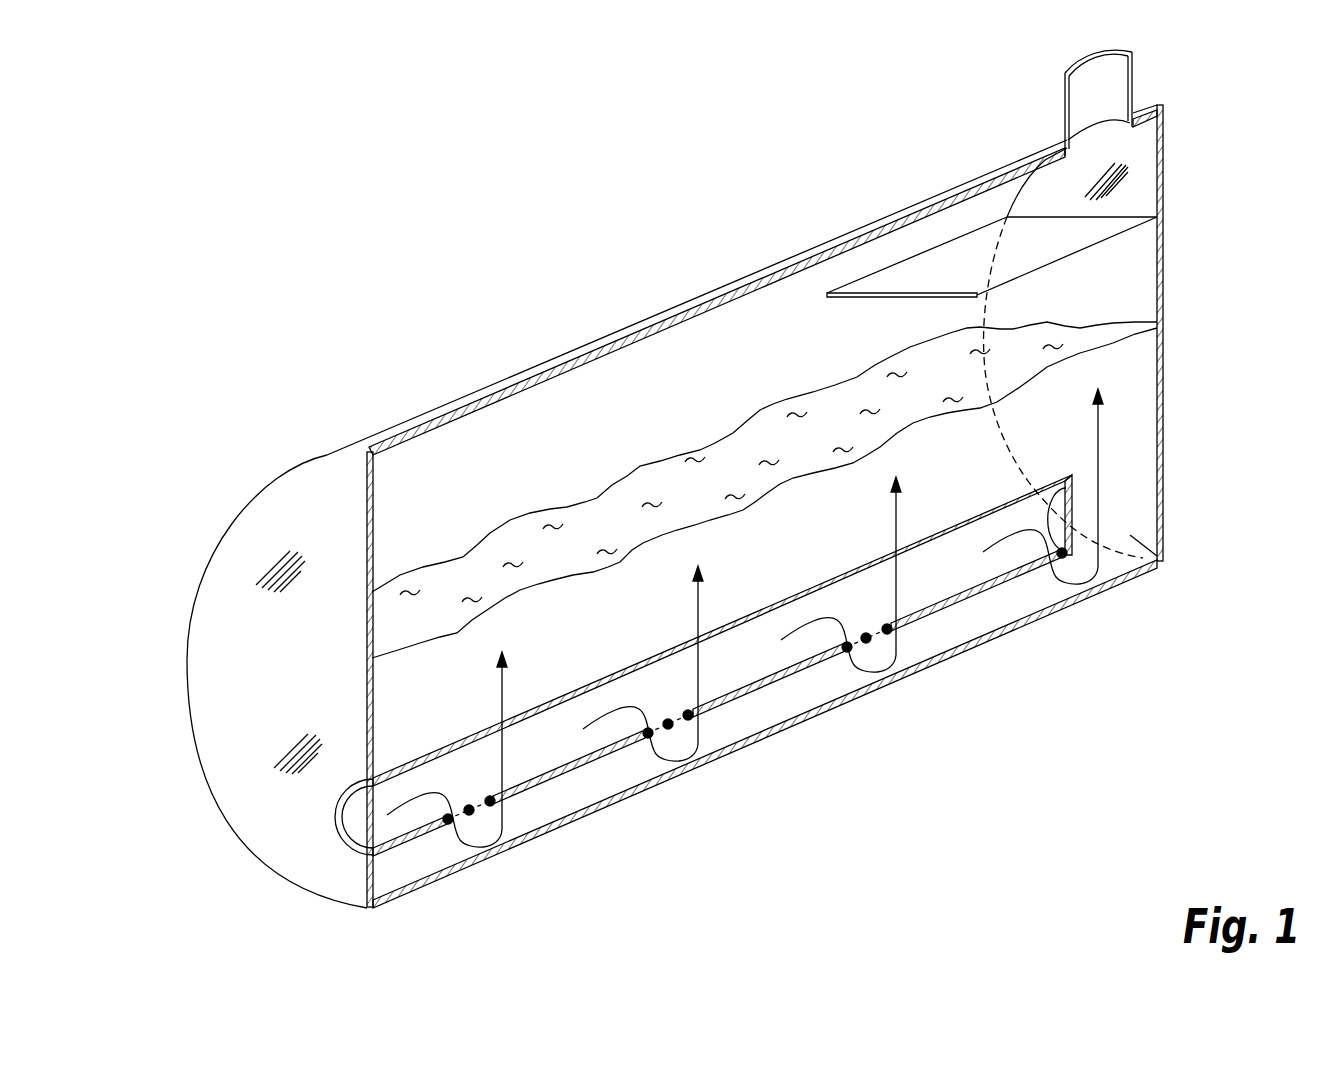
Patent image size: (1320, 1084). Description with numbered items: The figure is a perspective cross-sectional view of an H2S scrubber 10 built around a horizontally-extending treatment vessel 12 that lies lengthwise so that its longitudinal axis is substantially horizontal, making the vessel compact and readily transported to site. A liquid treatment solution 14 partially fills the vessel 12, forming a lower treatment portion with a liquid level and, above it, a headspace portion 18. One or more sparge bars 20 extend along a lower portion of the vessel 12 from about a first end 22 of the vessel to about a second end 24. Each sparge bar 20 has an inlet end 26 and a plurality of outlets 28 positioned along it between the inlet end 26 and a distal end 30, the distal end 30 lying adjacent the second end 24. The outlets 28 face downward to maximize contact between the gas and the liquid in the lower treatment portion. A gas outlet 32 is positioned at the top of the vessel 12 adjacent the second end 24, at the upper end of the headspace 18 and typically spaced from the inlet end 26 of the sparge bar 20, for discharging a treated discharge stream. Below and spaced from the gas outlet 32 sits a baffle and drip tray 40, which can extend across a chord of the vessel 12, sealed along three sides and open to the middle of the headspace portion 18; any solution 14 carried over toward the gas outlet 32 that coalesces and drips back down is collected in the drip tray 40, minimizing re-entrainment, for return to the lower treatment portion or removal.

The scrubber 10 is at (428, 298).
The treatment vessel 12 is at (332, 509).
The liquid treatment solution 14 is at (1070, 410).
The headspace portion 18 is at (645, 421).
The sparge bar 20 is at (933, 535).
The first end 22 is at (347, 885).
The second end 24 is at (1138, 540).
The inlet end 26 is at (363, 825).
The outlets 28 is at (472, 815).
The distal end 30 is at (1050, 517).
The gas outlet 32 is at (1083, 97).
The baffle and drip tray 40 is at (1027, 262).